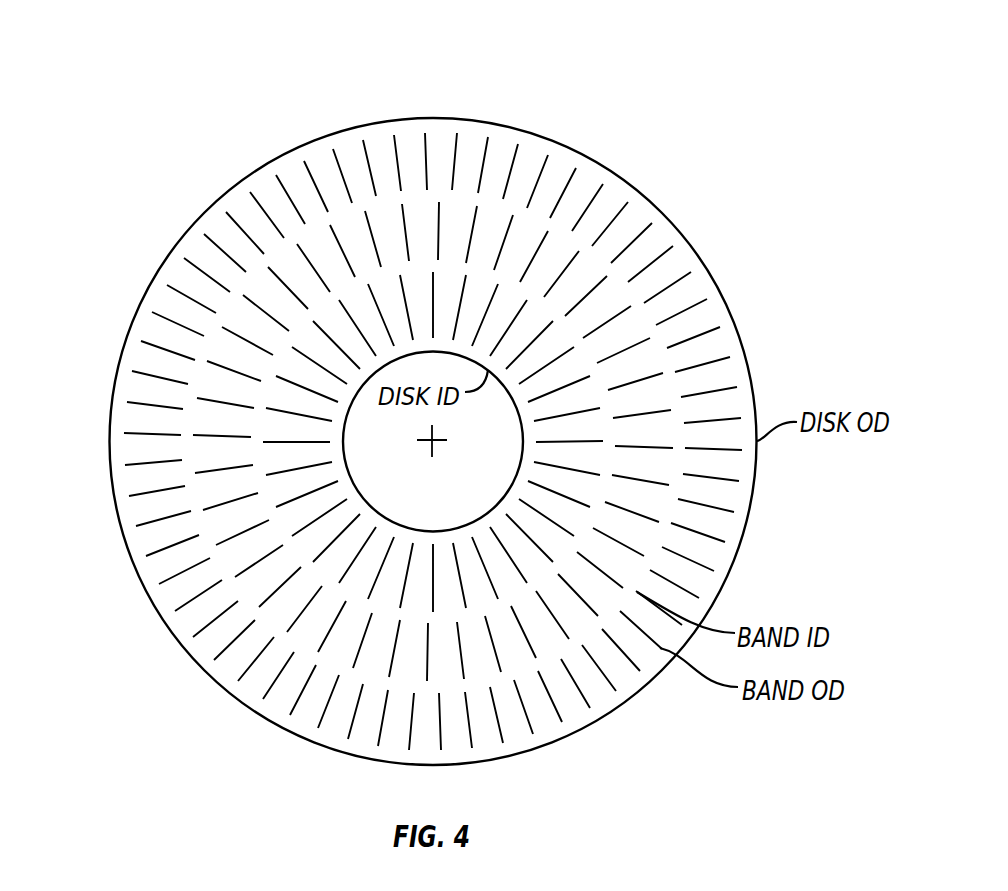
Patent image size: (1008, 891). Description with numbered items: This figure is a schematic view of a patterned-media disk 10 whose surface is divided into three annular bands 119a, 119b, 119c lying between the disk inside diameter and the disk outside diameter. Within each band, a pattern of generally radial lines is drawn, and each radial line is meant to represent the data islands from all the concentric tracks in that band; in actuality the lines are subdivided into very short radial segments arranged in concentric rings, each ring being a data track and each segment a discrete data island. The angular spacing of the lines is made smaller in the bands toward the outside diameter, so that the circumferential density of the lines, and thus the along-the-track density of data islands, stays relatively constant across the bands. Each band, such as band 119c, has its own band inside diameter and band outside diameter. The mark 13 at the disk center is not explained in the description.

The patterned-media disk 10 is at (128, 52).
The disk center 13 is at (431, 438).
The annular band 119a is at (412, 288).
The annular band 119b is at (532, 237).
The annular band 119c is at (633, 220).